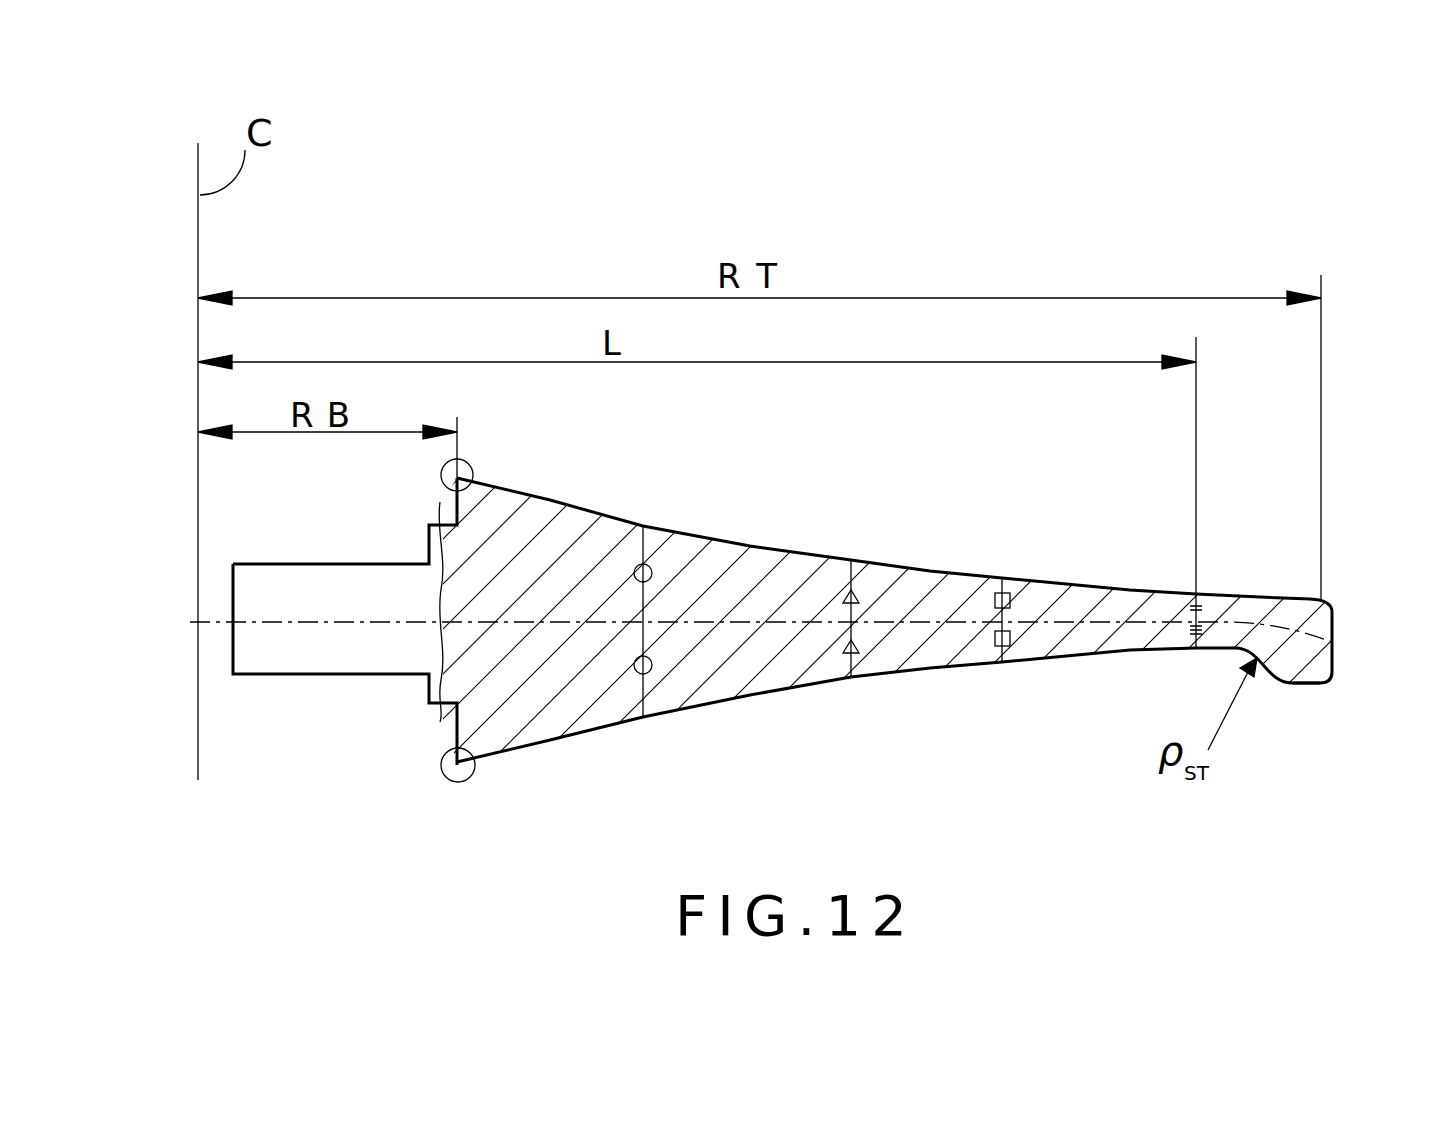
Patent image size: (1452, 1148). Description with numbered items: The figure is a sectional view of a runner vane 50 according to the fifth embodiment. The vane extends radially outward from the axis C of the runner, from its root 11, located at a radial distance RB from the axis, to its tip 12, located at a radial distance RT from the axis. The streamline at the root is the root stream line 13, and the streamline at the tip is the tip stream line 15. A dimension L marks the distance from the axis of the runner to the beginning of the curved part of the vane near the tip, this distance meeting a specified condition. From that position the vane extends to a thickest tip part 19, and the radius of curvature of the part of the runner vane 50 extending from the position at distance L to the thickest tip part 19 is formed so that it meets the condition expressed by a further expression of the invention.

The runner vane 50 is at (1262, 232).
The root 11 is at (457, 733).
The tip 12 is at (1333, 628).
The root stream line 13 is at (457, 782).
The tip stream line 15 is at (1322, 688).
The thickest tip part 19 is at (1300, 688).